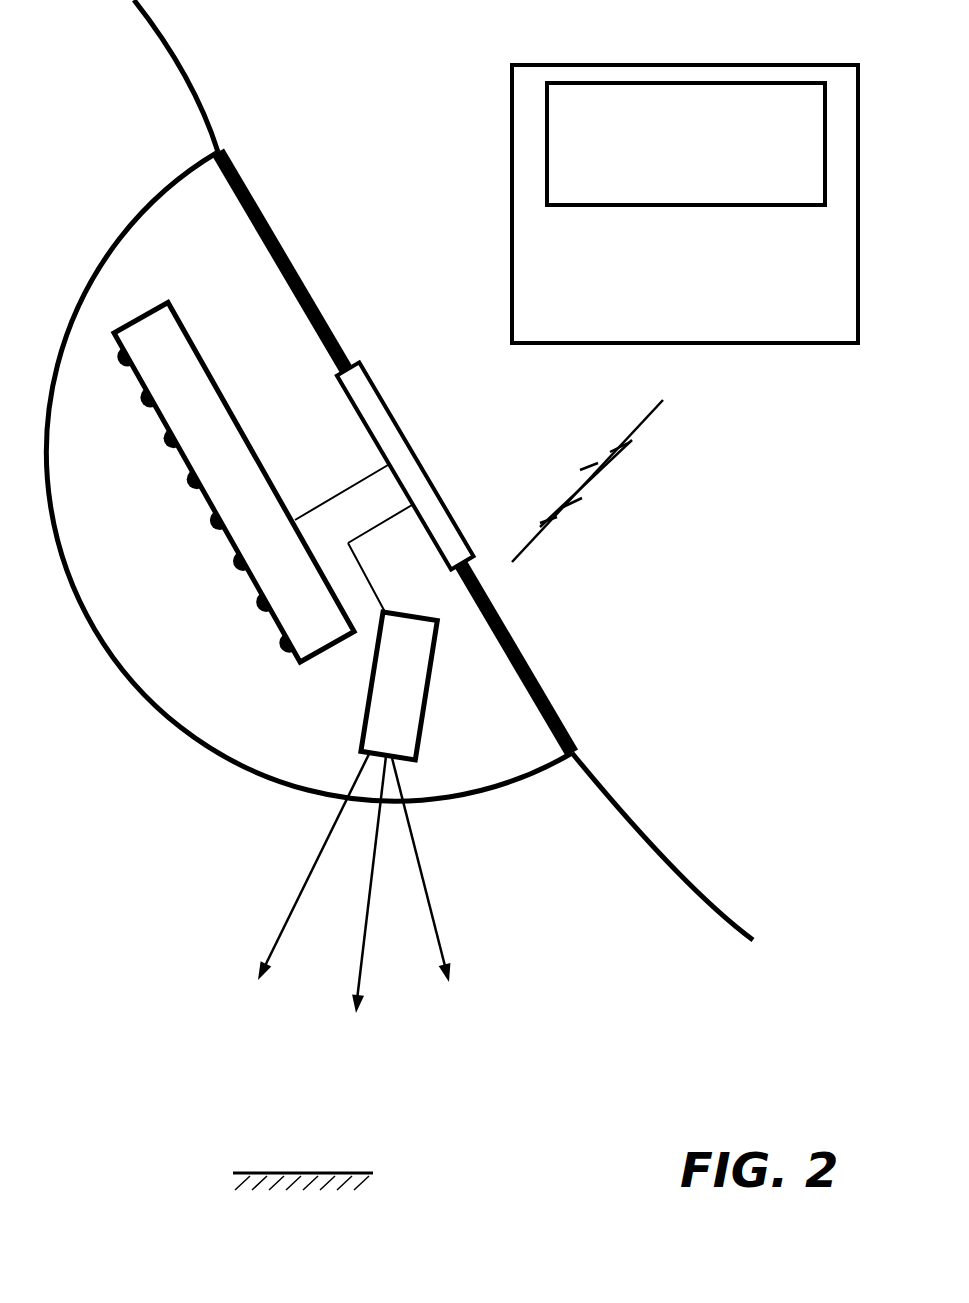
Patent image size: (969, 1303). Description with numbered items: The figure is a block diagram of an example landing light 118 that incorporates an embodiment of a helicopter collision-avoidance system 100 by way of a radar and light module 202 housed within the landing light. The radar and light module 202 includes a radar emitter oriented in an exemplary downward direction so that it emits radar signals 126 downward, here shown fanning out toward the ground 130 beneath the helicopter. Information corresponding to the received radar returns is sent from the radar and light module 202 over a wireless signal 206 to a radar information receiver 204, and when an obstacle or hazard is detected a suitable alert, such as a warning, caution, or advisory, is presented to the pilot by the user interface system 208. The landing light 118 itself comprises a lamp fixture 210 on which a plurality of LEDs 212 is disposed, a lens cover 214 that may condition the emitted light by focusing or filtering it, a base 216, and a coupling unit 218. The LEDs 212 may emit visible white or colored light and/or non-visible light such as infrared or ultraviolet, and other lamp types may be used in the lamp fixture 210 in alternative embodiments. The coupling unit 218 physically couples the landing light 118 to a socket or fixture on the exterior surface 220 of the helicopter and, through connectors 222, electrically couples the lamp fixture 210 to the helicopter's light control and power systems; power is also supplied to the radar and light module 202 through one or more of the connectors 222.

The helicopter collision-avoidance system 100 is at (735, 683).
The landing light 118 is at (355, 280).
The radar signals 126 is at (262, 883).
The ground surface 130 is at (297, 1173).
The radar and light module 202 is at (367, 713).
The radar information receiver 204 is at (807, 321).
The wireless signal 206 is at (632, 472).
The user interface system 208 is at (799, 187).
The lamp fixture 210 is at (232, 342).
The LEDs 212 is at (165, 432).
The lens cover 214 is at (55, 528).
The base 216 is at (258, 203).
The coupling unit 218 is at (400, 425).
The exterior surface 220 is at (162, 57).
The connectors 222 is at (312, 478).